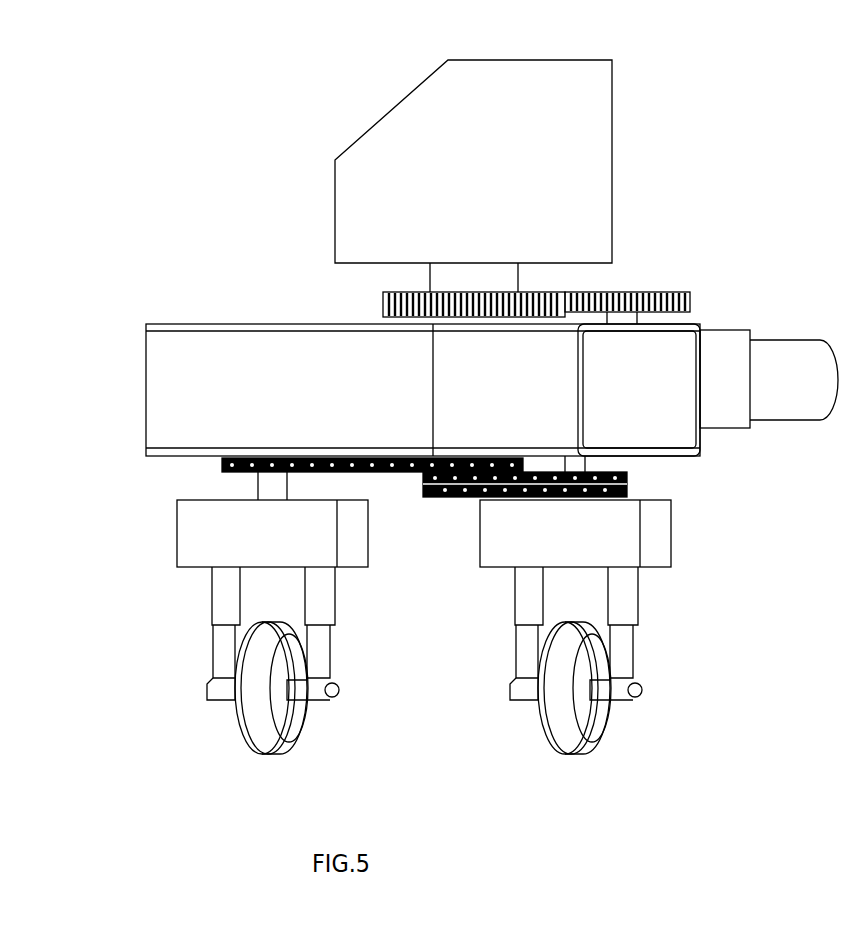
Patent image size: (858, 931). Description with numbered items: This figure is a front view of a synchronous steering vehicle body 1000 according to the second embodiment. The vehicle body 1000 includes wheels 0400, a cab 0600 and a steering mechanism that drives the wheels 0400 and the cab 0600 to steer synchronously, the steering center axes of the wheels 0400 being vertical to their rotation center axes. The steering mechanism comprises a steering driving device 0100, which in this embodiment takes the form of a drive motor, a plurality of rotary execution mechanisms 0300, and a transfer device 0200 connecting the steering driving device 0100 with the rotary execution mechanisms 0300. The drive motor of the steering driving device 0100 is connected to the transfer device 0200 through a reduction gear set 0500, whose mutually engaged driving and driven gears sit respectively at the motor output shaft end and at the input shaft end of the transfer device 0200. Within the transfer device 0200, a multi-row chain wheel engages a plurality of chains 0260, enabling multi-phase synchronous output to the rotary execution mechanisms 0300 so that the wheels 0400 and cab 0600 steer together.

The synchronous steering vehicle body 1000 is at (338, 378).
The steering driving device 0100 is at (775, 358).
The transfer device 0200 is at (590, 458).
The chain 0260 is at (432, 497).
The rotary execution mechanism 0300 is at (268, 478).
The wheel 0400 is at (290, 718).
The reduction gear set 0500 is at (627, 290).
The cab 0600 is at (568, 188).